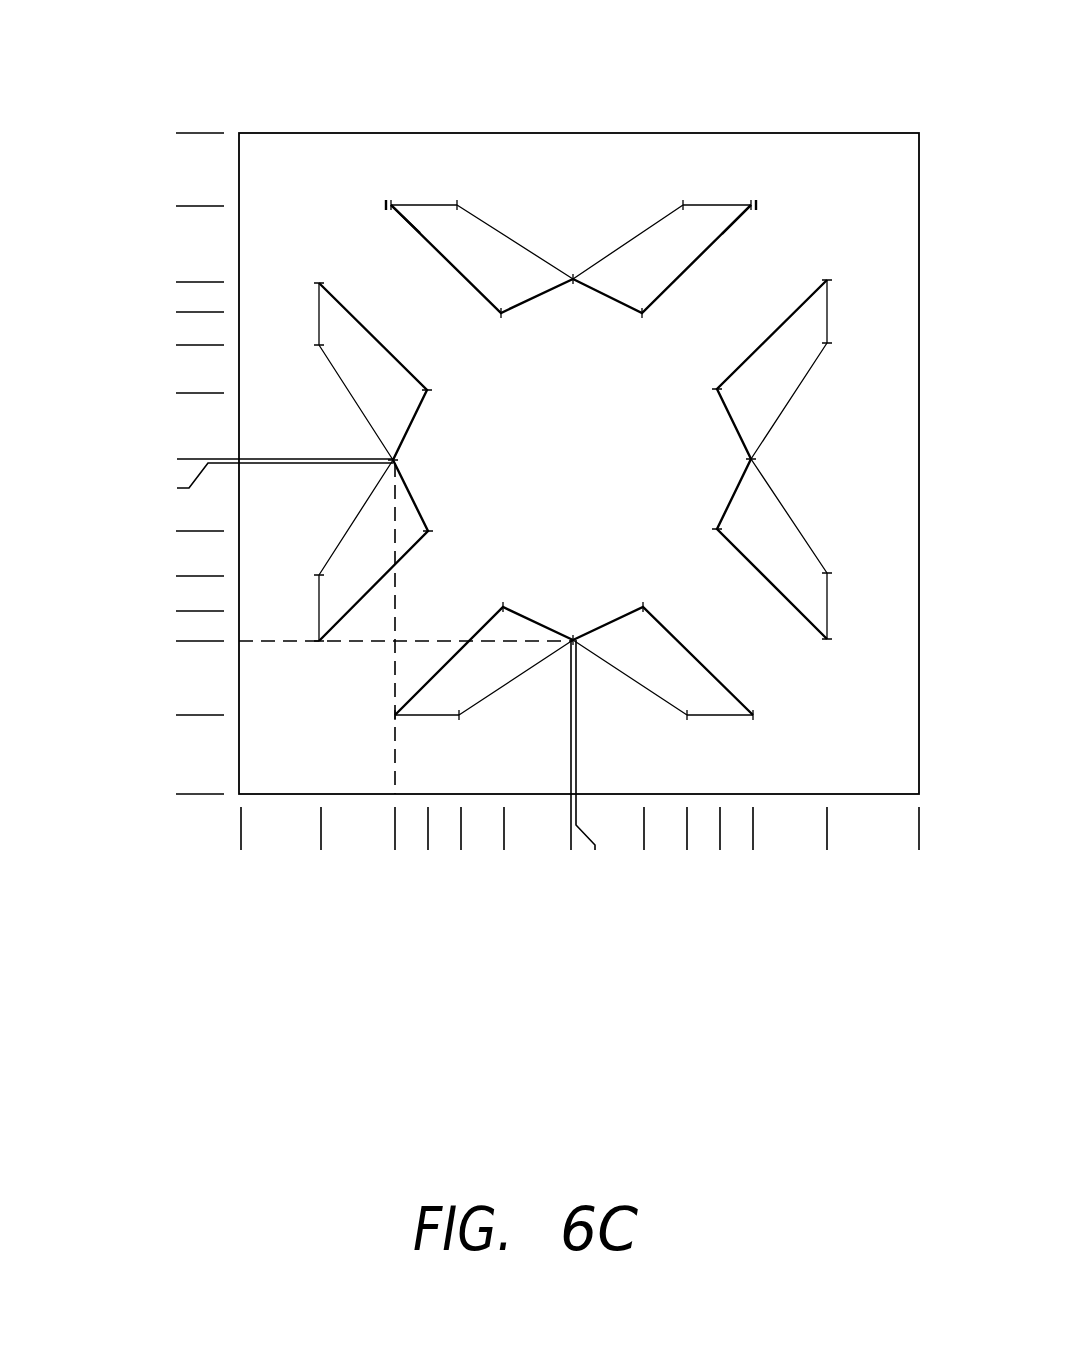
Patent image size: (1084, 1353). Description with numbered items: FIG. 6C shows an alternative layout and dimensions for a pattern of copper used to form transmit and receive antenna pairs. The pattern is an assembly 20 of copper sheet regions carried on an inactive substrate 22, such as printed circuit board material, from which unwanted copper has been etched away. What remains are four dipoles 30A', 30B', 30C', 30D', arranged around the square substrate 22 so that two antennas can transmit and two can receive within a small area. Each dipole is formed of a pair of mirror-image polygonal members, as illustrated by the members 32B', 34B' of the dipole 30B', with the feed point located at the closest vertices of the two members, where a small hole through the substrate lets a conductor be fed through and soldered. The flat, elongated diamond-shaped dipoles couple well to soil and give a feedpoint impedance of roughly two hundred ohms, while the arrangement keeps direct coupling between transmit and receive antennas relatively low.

The assembly 20 is at (732, 65).
The inactive substrate 22 is at (415, 123).
The dipole 30A' is at (443, 462).
The dipole 30B' is at (571, 244).
The dipole 30C' is at (708, 459).
The dipole 30D' is at (574, 627).
The member 32B' is at (346, 201).
The member 34B' is at (798, 200).